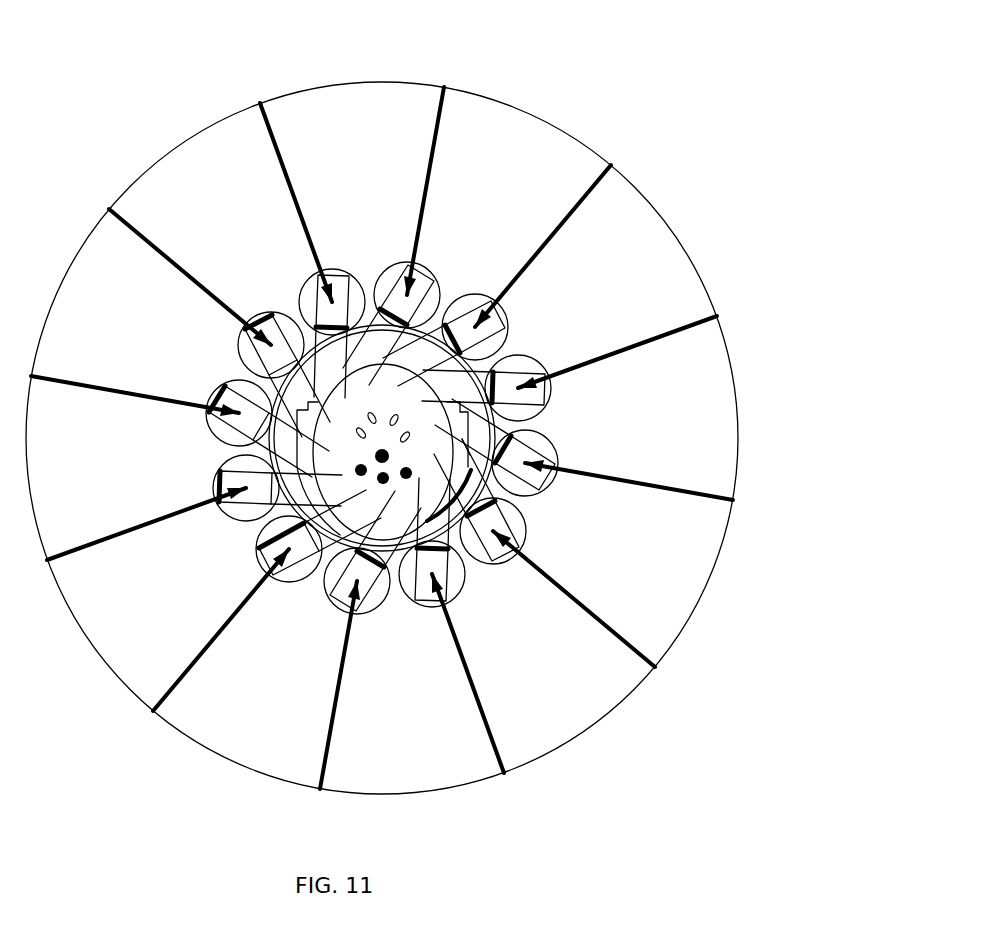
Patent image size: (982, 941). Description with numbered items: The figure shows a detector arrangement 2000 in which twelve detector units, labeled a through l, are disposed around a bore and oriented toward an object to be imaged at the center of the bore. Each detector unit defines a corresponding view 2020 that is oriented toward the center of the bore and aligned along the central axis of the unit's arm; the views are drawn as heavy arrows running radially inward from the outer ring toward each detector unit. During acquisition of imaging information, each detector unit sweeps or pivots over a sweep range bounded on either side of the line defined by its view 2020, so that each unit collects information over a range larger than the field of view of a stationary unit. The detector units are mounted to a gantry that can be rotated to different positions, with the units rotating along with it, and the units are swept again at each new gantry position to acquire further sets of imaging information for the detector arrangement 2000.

The detector arrangement 2000 is at (546, 60).
The view 2020 is at (468, 568).